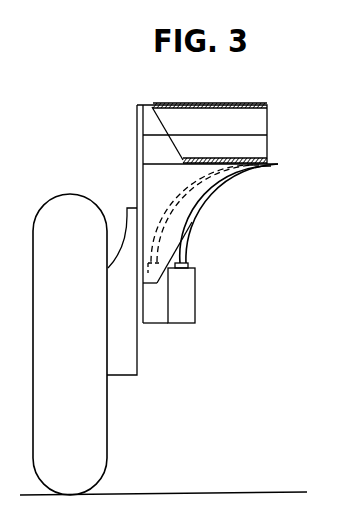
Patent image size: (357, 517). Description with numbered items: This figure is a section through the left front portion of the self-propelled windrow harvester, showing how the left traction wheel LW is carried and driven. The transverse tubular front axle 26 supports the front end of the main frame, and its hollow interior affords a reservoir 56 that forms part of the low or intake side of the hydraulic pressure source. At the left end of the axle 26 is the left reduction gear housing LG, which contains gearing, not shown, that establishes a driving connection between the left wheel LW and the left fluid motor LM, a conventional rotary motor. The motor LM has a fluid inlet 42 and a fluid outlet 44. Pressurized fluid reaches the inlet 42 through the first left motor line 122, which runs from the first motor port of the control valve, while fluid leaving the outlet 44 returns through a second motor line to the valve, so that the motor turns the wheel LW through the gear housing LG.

The transverse tubular front axle 26 is at (242, 112).
The reservoir 56 is at (260, 143).
The first left motor line 122 is at (225, 178).
The fluid inlet 42 is at (185, 262).
The fluid outlet 44 is at (147, 264).
The left fluid motor LM is at (190, 317).
The left reduction gear housing LG is at (130, 369).
The left traction wheel LW is at (102, 447).